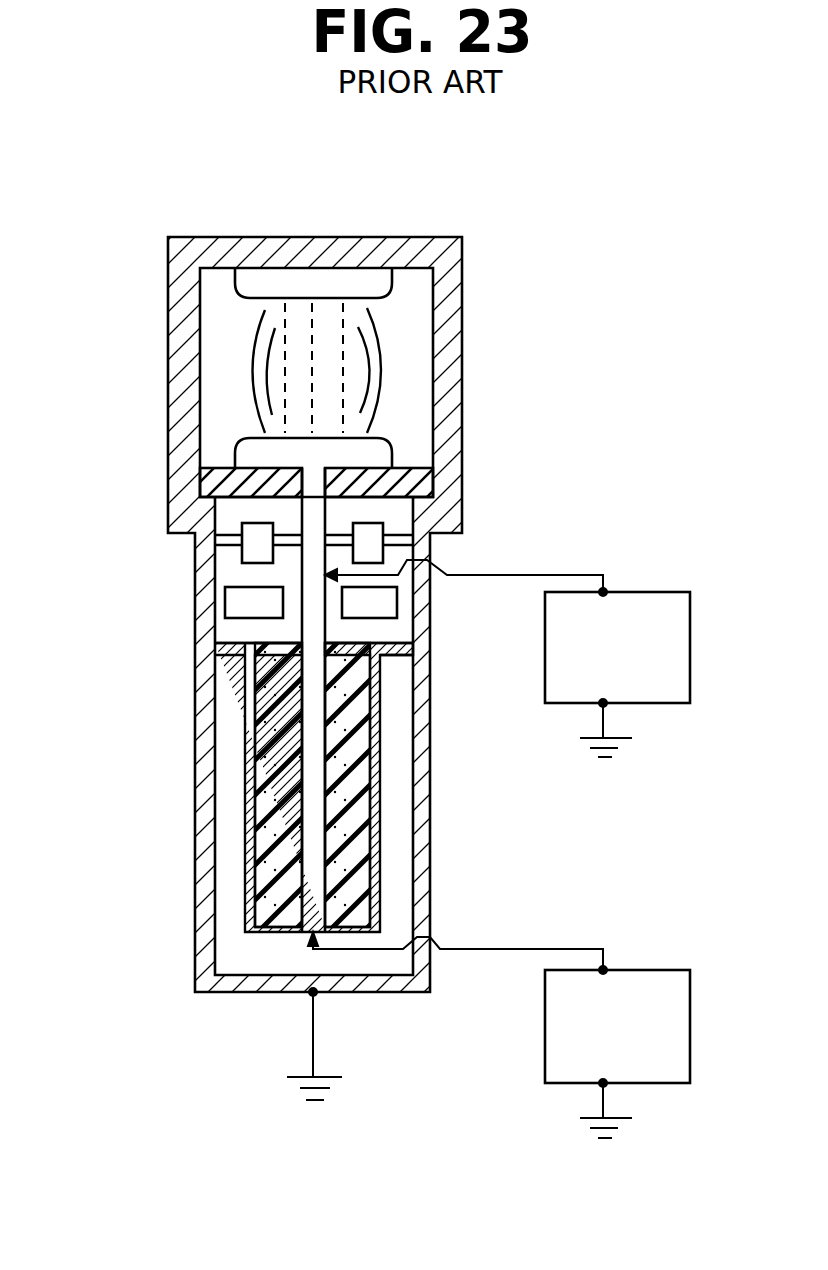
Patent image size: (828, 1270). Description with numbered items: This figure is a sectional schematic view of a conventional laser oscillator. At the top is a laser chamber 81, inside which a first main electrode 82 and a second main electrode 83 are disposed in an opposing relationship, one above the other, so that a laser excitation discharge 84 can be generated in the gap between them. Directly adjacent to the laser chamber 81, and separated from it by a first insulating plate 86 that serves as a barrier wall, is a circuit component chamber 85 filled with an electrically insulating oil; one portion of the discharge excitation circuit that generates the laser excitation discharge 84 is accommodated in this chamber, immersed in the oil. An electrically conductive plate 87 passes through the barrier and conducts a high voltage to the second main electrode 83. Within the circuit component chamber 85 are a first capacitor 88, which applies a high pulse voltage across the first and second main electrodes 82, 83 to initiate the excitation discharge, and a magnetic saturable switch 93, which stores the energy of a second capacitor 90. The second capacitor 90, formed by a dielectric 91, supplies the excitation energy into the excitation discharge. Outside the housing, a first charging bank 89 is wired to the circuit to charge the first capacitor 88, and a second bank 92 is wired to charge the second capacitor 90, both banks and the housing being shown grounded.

The laser chamber 81 is at (412, 370).
The first main electrode 82 is at (313, 280).
The second main electrode 83 is at (370, 458).
The laser excitation discharge 84 is at (275, 400).
The circuit component chamber 85 is at (405, 522).
The first insulating plate 86 is at (413, 484).
The electrically conductive plate 87 is at (303, 512).
The first capacitor 88 is at (247, 553).
The first charging bank 89 is at (625, 592).
The second capacitor 90 is at (247, 705).
The dielectric 91 is at (262, 777).
The second bank 92 is at (625, 970).
The magnetic saturable switch 93 is at (237, 602).